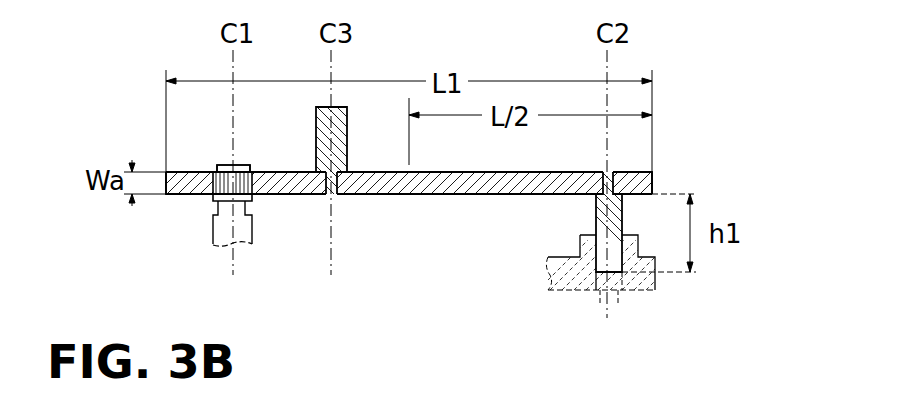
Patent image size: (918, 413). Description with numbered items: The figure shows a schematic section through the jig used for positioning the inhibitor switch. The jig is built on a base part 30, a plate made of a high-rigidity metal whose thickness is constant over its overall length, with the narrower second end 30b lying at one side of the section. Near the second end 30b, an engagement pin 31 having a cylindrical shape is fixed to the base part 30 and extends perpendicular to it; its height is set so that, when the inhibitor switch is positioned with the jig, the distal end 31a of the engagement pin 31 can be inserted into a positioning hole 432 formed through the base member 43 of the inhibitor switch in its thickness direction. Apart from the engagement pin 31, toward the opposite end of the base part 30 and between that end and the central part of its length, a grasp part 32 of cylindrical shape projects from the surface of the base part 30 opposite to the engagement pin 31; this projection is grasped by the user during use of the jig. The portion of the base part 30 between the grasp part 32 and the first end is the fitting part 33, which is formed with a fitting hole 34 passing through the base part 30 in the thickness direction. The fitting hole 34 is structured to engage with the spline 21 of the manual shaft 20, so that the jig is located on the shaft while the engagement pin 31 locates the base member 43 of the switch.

The bolt 20 is at (252, 239).
The spline 21 is at (246, 165).
The base part 30 is at (389, 195).
The second end 30b is at (655, 172).
The engagement pin 31 is at (601, 220).
The distal end 31a is at (616, 275).
The grasp part 32 is at (347, 126).
The fitting part 33 is at (188, 195).
The fitting hole 34 is at (222, 166).
The base member 43 is at (549, 272).
The positioning hole 432 is at (597, 285).